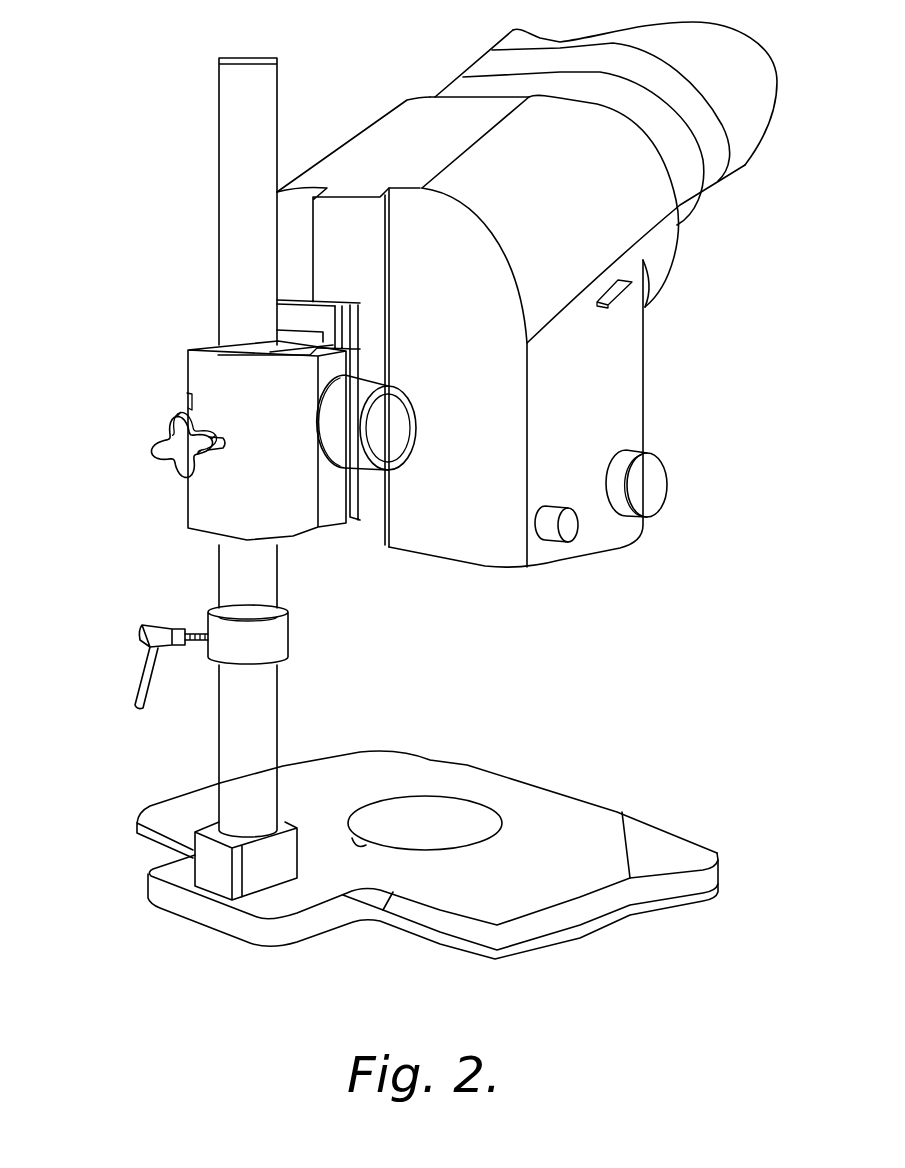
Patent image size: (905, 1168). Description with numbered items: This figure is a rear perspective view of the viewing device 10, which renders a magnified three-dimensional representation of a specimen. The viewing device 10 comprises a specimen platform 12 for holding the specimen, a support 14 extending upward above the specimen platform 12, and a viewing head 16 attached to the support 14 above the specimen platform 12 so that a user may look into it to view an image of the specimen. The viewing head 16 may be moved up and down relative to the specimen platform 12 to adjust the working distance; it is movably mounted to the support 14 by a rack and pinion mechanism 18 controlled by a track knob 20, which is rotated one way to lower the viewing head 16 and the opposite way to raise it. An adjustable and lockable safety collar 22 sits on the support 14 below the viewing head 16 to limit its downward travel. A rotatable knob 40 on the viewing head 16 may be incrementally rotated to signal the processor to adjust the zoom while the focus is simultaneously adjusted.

The viewing device 10 is at (127, 309).
The specimen platform 12 is at (583, 808).
The support 14 is at (226, 116).
The viewing head 16 is at (673, 342).
The rack and pinion mechanism 18 is at (200, 515).
The track knob 20 is at (187, 397).
The safety collar 22 is at (273, 632).
The rotatable knob 40 is at (655, 498).